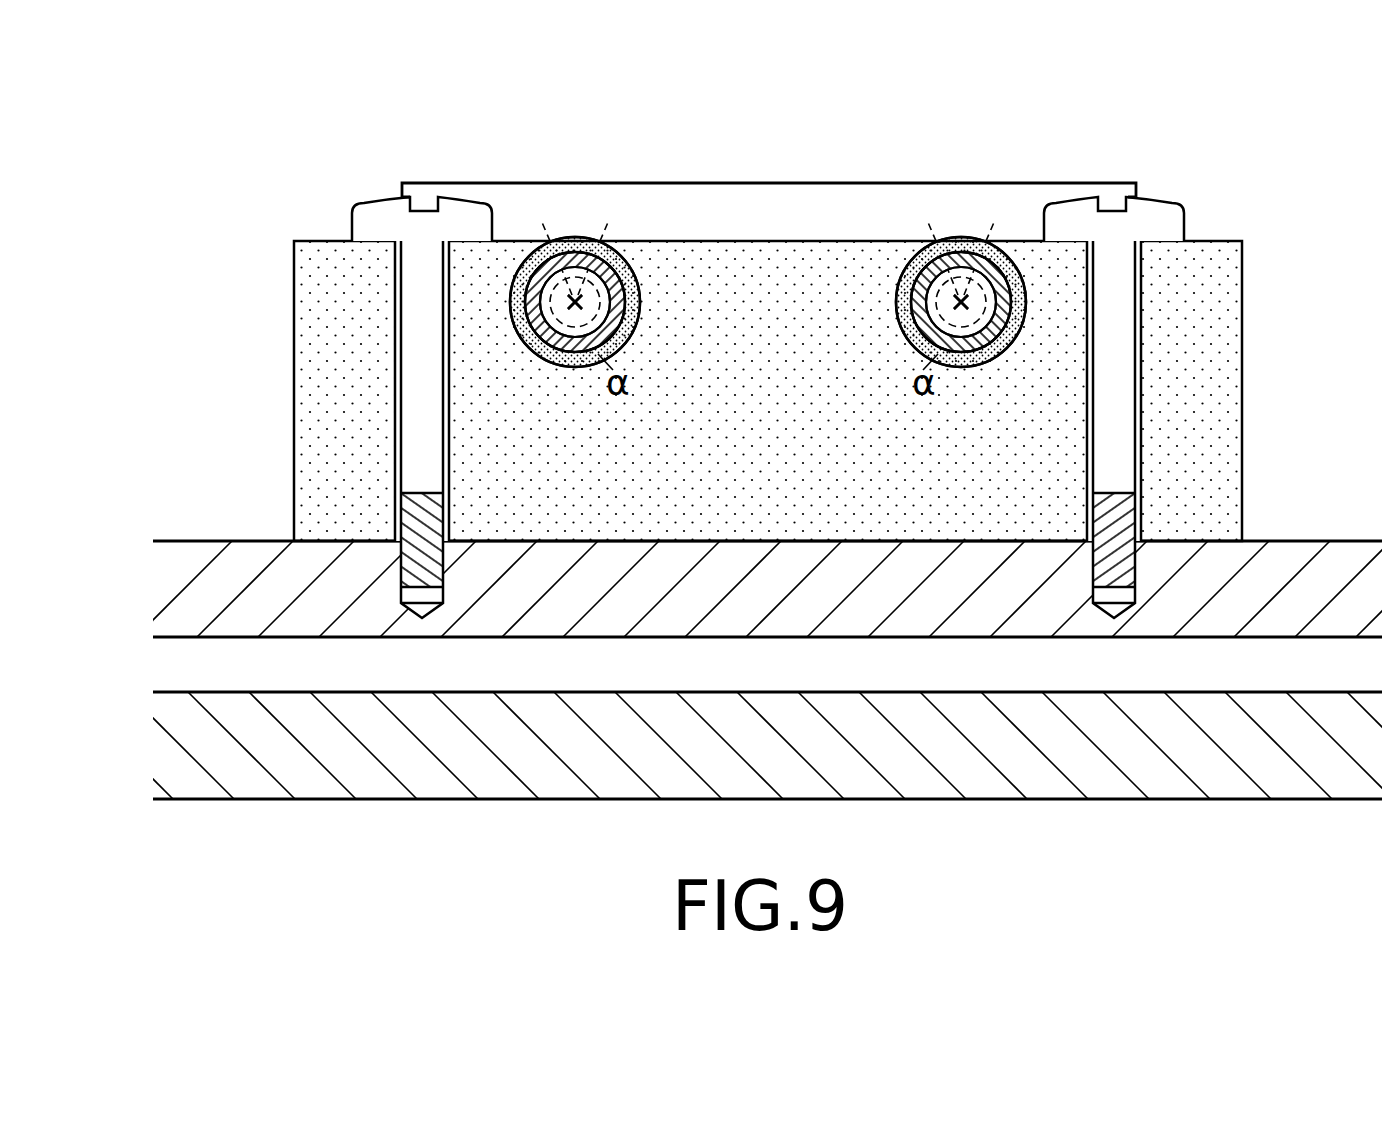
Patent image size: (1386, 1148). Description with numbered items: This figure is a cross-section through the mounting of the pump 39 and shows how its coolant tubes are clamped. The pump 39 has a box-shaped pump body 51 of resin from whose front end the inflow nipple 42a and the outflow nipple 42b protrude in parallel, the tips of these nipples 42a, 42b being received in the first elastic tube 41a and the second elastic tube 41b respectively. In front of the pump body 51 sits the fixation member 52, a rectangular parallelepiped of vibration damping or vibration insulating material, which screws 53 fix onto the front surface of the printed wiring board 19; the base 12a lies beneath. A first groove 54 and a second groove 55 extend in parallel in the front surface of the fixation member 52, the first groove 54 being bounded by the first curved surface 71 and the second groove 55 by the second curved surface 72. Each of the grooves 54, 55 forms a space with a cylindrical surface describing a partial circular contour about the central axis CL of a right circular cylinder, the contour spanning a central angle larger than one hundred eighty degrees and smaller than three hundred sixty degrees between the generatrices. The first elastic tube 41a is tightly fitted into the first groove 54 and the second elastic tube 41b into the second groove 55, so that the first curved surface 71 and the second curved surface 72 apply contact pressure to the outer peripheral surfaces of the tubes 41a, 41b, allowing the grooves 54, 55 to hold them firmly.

The pump 39 is at (1053, 142).
The pump body 51 is at (698, 180).
The fixation member 52 is at (1243, 432).
The screw 53 is at (382, 198).
The first groove 54 is at (924, 238).
The second groove 55 is at (612, 238).
The first elastic tube 41a is at (912, 291).
The second elastic tube 41b is at (624, 291).
The inflow nipple 42a is at (943, 333).
The outflow nipple 42b is at (593, 333).
The first curved surface 71 is at (975, 362).
The second curved surface 72 is at (561, 361).
The printed wiring board 19 is at (238, 540).
The base 12a is at (1152, 800).
The central axis CL is at (580, 304).